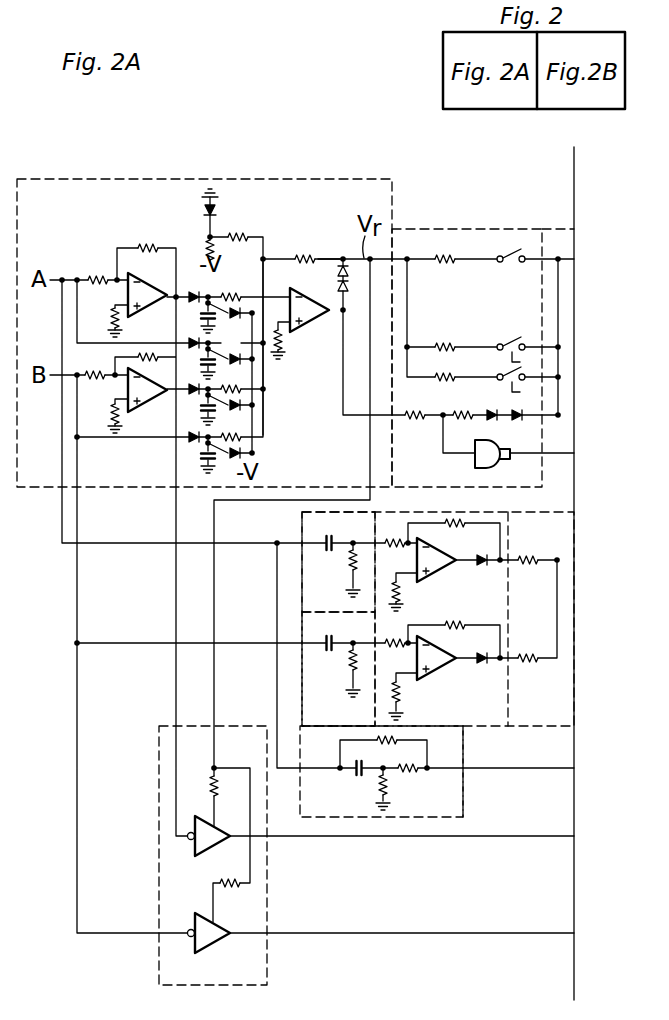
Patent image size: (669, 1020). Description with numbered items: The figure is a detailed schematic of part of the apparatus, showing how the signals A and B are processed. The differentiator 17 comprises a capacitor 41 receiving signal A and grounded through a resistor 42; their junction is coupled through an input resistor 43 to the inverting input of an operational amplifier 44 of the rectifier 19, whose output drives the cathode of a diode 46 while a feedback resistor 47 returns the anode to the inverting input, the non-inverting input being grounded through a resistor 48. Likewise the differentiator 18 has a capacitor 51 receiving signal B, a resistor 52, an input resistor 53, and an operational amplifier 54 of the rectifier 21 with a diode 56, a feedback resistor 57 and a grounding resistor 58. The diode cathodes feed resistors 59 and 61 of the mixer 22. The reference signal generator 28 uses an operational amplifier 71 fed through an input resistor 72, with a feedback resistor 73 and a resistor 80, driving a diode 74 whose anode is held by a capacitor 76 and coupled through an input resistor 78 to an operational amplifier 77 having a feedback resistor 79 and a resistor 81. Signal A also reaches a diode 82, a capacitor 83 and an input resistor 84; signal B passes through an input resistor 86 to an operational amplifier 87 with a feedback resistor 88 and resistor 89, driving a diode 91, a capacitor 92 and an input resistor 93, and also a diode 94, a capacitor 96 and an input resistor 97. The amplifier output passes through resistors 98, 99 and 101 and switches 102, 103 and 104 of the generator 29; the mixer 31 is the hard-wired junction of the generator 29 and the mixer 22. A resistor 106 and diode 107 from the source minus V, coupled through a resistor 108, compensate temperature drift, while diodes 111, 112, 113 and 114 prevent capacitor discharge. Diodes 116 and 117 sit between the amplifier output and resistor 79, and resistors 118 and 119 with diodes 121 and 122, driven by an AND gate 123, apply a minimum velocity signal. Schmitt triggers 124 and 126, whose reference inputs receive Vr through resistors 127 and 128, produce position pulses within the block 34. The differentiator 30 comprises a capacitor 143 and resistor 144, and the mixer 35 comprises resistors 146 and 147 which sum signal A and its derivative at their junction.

The differentiator 17 is at (302, 530).
The differentiator 18 is at (302, 681).
The rectifier 19 is at (500, 512).
The rectifier 21 is at (488, 728).
The mixer 22 is at (548, 727).
The reference signal generator 28 is at (392, 179).
The generator 29 is at (503, 229).
The differentiator 30 is at (380, 817).
The mixer 31 is at (558, 229).
The inverter circuit 34 is at (267, 895).
The mixer 35 is at (463, 792).
The capacitor 41 is at (327, 538).
The resistor 42 is at (350, 572).
The input resistor 43 is at (394, 534).
The operational amplifier 44 is at (438, 565).
The diode 46 is at (482, 556).
The feedback resistor 47 is at (456, 520).
The resistor 48 is at (392, 590).
The capacitor 51 is at (332, 630).
The resistor 52 is at (352, 668).
The input resistor 53 is at (394, 640).
The operational amplifier 54 is at (448, 670).
The diode 56 is at (482, 654).
The feedback resistor 57 is at (460, 626).
The resistor 58 is at (402, 694).
The resistor 59 is at (528, 558).
The resistor 61 is at (528, 654).
The operational amplifier 71 is at (150, 285).
The input resistor 72 is at (96, 275).
The feedback resistor 73 is at (144, 245).
The diode 74 is at (194, 290).
The capacitor 76 is at (200, 312).
The operational amplifier 77 is at (327, 322).
The input resistor 78 is at (234, 281).
The feedback resistor 79 is at (304, 248).
The resistor 80 is at (112, 315).
The resistor 81 is at (290, 347).
The diode 82 is at (192, 336).
The capacitor 83 is at (205, 353).
The input resistor 84 is at (232, 314).
The input resistor 86 is at (91, 373).
The operational amplifier 87 is at (134, 412).
The feedback resistor 88 is at (149, 357).
The resistor 89 is at (112, 414).
The diode 91 is at (190, 375).
The capacitor 92 is at (200, 412).
The input resistor 93 is at (266, 390).
The diode 94 is at (188, 438).
The capacitor 96 is at (200, 466).
The input resistor 97 is at (254, 438).
The resistor 98 is at (444, 262).
The resistor 99 is at (444, 343).
The resistor 101 is at (444, 374).
The switch 102 is at (510, 262).
The switch 103 is at (506, 342).
The switch 104 is at (502, 374).
The resistor 106 is at (204, 236).
The diode 107 is at (216, 211).
The resistor 108 is at (242, 233).
The diode 111 is at (281, 286).
The diode 112 is at (248, 360).
The diode 113 is at (246, 409).
The diode 114 is at (248, 454).
The diode 116 is at (331, 257).
The diode 117 is at (338, 289).
The resistor 118 is at (412, 418).
The resistor 119 is at (460, 412).
The diode 121 is at (492, 410).
The diode 122 is at (517, 418).
The AND gate 123 is at (475, 462).
The Schmitt trigger 124 is at (218, 943).
The Schmitt trigger 126 is at (200, 856).
The resistor 127 is at (232, 878).
The resistor 128 is at (215, 776).
The capacitor 143 is at (352, 773).
The resistor 144 is at (378, 796).
The resistor 146 is at (400, 740).
The resistor 147 is at (412, 772).